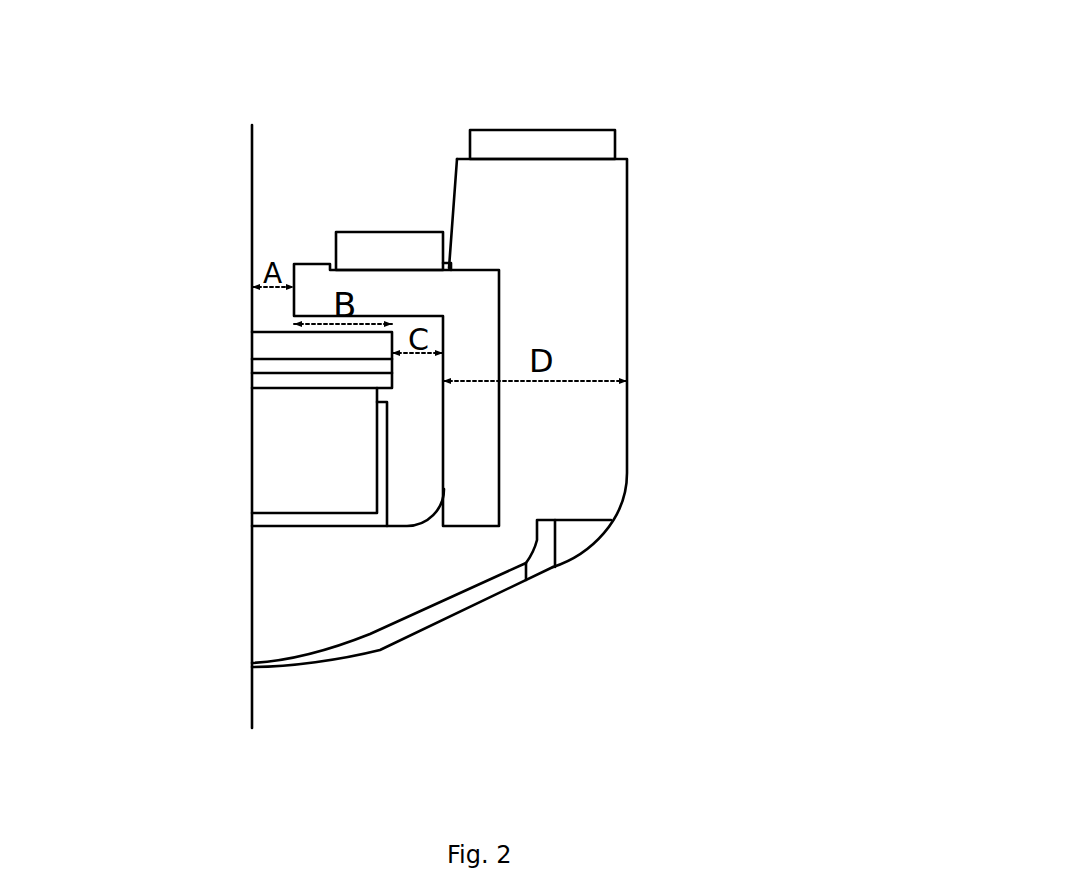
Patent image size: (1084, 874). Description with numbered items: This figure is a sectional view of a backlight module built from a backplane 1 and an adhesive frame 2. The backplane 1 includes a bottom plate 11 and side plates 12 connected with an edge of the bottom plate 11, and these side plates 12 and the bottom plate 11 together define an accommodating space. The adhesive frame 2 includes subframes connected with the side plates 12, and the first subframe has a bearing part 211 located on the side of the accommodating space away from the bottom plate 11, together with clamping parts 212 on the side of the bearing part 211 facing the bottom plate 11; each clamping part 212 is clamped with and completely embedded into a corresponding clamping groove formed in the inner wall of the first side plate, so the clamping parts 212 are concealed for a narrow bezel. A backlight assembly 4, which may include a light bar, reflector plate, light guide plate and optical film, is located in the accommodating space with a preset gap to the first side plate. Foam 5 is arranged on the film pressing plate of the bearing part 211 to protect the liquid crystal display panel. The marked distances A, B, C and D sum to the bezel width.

The backplane 1 is at (477, 633).
The bottom plate 11 is at (279, 590).
The side plates 12 is at (552, 332).
The adhesive frame 2 is at (523, 441).
The bearing part 211 is at (403, 307).
The clamping parts 212 is at (472, 503).
The backlight assembly 4 is at (312, 435).
The foam 5 is at (425, 248).